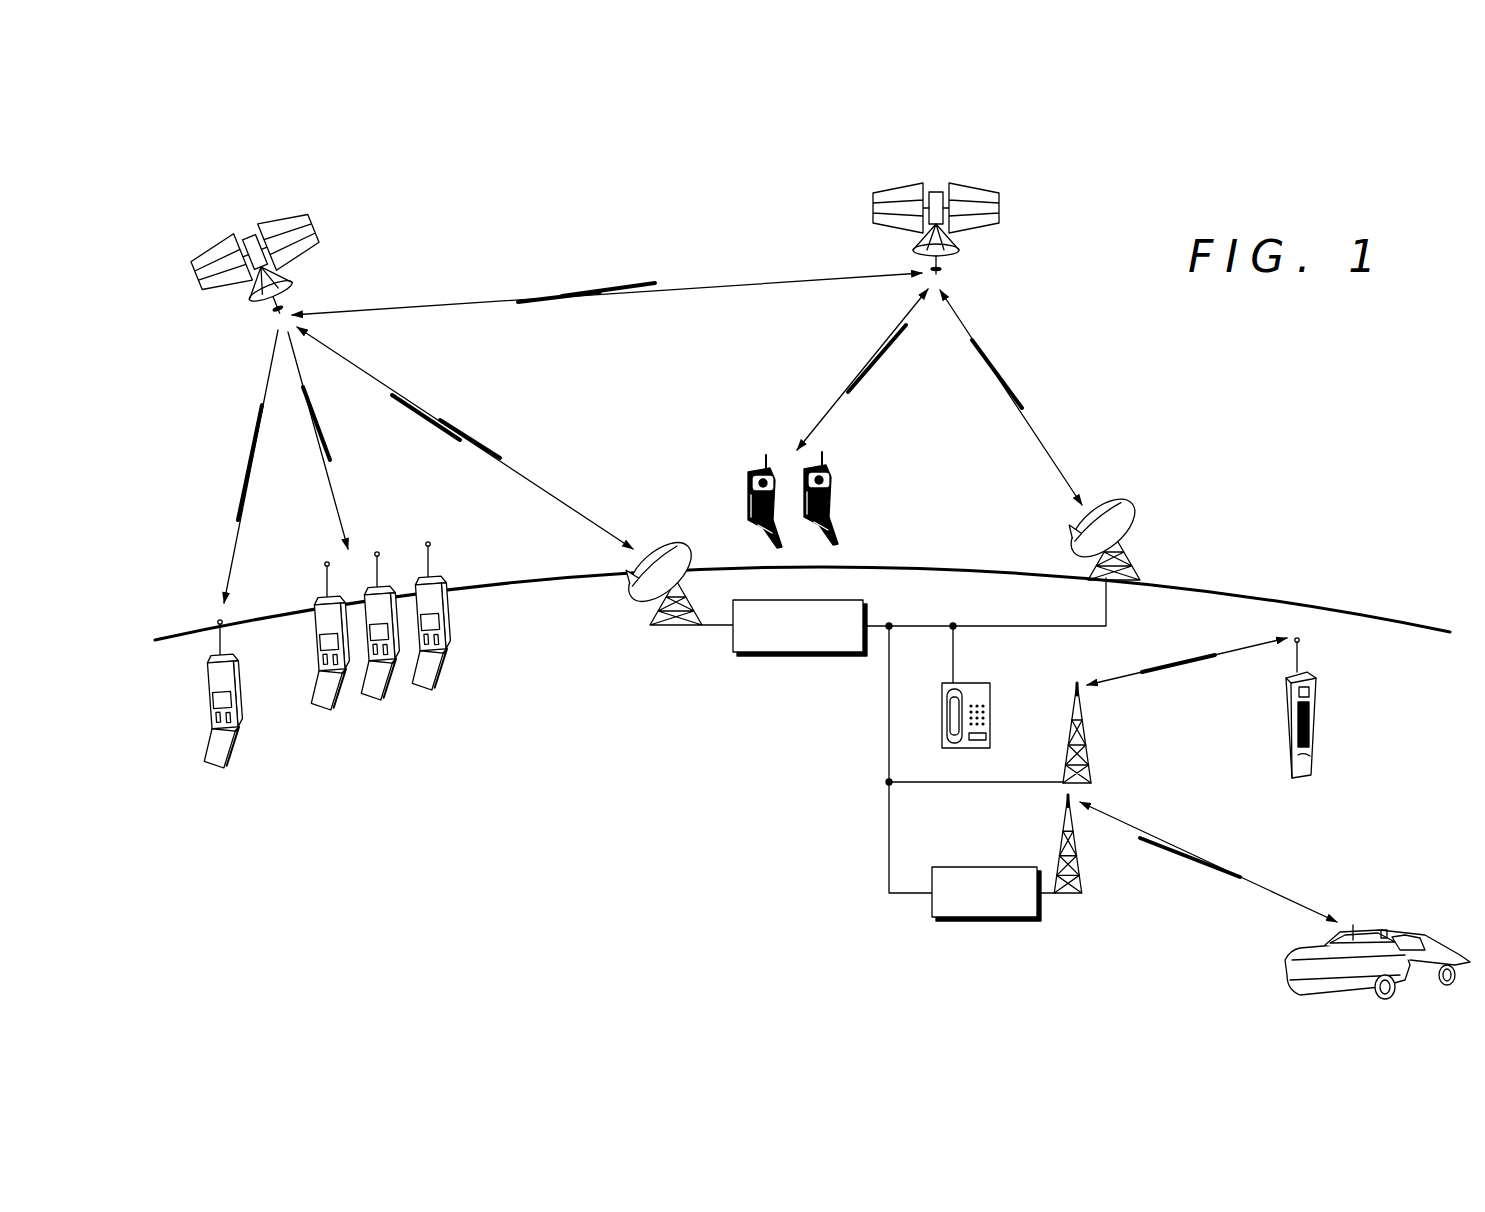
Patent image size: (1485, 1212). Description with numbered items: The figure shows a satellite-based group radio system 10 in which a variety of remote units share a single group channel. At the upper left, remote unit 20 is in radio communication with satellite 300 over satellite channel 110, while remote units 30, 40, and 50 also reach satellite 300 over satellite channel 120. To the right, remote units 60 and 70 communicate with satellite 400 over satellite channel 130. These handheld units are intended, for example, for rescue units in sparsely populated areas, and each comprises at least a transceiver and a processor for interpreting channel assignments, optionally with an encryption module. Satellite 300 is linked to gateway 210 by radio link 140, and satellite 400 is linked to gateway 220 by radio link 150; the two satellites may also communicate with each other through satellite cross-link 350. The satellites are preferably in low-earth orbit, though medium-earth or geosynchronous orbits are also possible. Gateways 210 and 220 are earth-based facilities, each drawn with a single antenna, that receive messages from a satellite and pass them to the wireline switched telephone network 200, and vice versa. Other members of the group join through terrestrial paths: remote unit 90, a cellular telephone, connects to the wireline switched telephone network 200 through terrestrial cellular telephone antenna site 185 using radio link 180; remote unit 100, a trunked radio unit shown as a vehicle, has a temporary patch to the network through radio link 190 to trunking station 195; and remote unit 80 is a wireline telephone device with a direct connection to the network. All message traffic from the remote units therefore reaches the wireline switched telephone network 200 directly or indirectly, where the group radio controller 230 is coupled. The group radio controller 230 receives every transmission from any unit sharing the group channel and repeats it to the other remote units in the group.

The satellite-based group radio system 10 is at (802, 473).
The remote unit 20 is at (212, 742).
The remote unit 30 is at (310, 695).
The remote unit 40 is at (360, 683).
The remote unit 50 is at (410, 670).
The remote unit 60 is at (747, 500).
The remote unit 70 is at (832, 508).
The remote unit 80 is at (990, 686).
The remote unit 90 is at (1322, 753).
The remote unit 100 is at (1302, 973).
The satellite channel 110 is at (262, 406).
The satellite channel 120 is at (340, 517).
The satellite channel 130 is at (870, 353).
The radio link 140 is at (456, 430).
The radio link 150 is at (1052, 462).
The radio link 180 is at (1175, 670).
The terrestrial cellular telephone antenna site 185 is at (1084, 738).
The radio link 190 is at (1196, 855).
The trunking station 195 is at (983, 866).
The wireline switched telephone network 200 is at (1038, 627).
The gateway 210 is at (642, 593).
The gateway 220 is at (1125, 519).
The group radio controller 230 is at (793, 655).
The satellite 300 is at (316, 227).
The satellite cross-link 350 is at (484, 302).
The satellite 400 is at (988, 213).